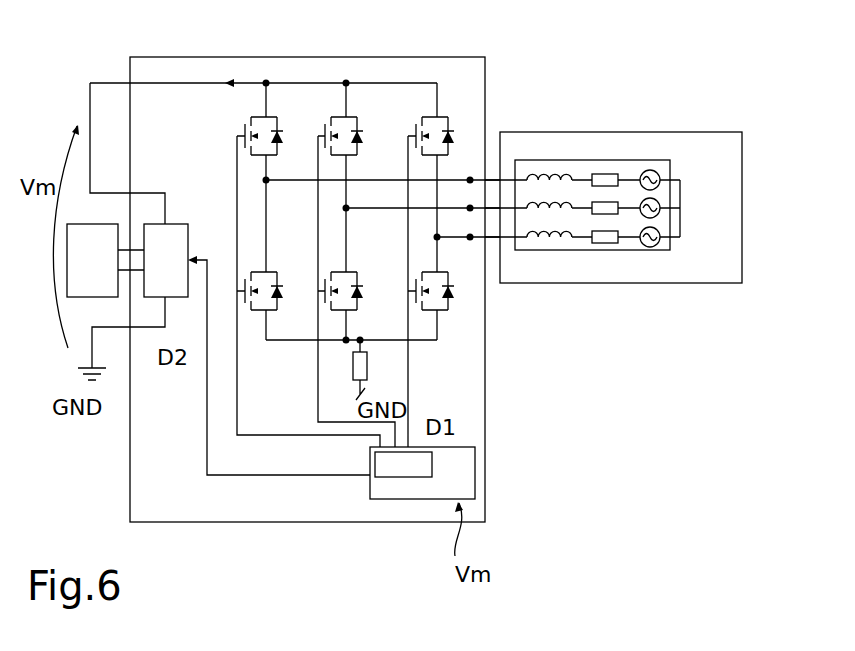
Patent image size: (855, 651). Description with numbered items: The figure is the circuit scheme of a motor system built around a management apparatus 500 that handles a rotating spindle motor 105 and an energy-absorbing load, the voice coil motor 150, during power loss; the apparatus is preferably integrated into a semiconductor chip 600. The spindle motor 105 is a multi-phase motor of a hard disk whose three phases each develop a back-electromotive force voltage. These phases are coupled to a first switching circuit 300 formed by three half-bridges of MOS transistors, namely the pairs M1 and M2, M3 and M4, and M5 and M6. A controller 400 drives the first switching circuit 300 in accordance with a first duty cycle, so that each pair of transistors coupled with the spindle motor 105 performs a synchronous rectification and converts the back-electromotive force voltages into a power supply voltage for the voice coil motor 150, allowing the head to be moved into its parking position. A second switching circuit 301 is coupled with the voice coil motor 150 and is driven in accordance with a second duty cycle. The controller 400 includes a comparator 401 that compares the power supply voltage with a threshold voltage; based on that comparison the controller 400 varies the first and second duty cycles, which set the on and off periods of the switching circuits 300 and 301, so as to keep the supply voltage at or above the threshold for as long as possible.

The semiconductor chip 600 is at (475, 412).
The first switching circuit 300 is at (419, 237).
The spindle motor 105 is at (621, 129).
The second switching circuit 301 is at (160, 222).
The voice coil motor 150 is at (77, 297).
The controller 400 is at (447, 489).
The comparator 401 is at (376, 465).
The management apparatus 500 is at (549, 363).
The MOS transistor M1 is at (276, 112).
The MOS transistor M2 is at (276, 267).
The MOS transistor M3 is at (356, 112).
The MOS transistor M4 is at (356, 267).
The MOS transistor M5 is at (447, 112).
The MOS transistor M6 is at (450, 316).